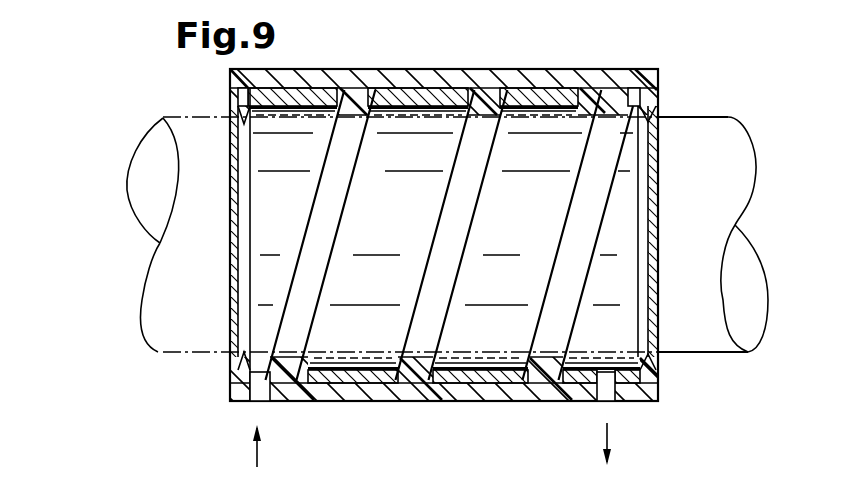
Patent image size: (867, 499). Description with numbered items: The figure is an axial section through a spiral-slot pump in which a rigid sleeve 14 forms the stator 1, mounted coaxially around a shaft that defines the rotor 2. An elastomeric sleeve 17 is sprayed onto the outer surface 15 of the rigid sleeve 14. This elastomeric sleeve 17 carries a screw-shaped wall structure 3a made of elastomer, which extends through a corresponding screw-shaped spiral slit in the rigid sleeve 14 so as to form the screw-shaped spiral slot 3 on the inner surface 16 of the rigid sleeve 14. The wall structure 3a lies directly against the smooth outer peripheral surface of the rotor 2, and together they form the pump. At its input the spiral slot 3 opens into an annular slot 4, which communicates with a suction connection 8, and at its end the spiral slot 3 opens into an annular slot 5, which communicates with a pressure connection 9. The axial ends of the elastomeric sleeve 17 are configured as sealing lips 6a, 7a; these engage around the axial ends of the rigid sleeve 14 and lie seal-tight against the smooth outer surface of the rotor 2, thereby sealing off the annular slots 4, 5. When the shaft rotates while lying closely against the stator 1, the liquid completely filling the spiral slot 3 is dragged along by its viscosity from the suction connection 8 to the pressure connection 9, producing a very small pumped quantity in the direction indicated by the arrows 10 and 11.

The stator 1 is at (592, 69).
The rotor 2 is at (152, 133).
The spiral slot 3 is at (415, 105).
The wall structure 3a is at (477, 130).
The annular slot 4 is at (262, 363).
The annular slot 5 is at (645, 365).
The sealing lip 6a is at (243, 101).
The sealing lip 7a is at (657, 103).
The suction connection 8 is at (248, 398).
The pressure connection 9 is at (602, 387).
The arrow 10 is at (258, 452).
The arrow 11 is at (608, 435).
The rigid sleeve 14 is at (513, 377).
The outer surface 15 is at (453, 385).
The inner surface 16 is at (480, 368).
The elastomeric sleeve 17 is at (658, 78).